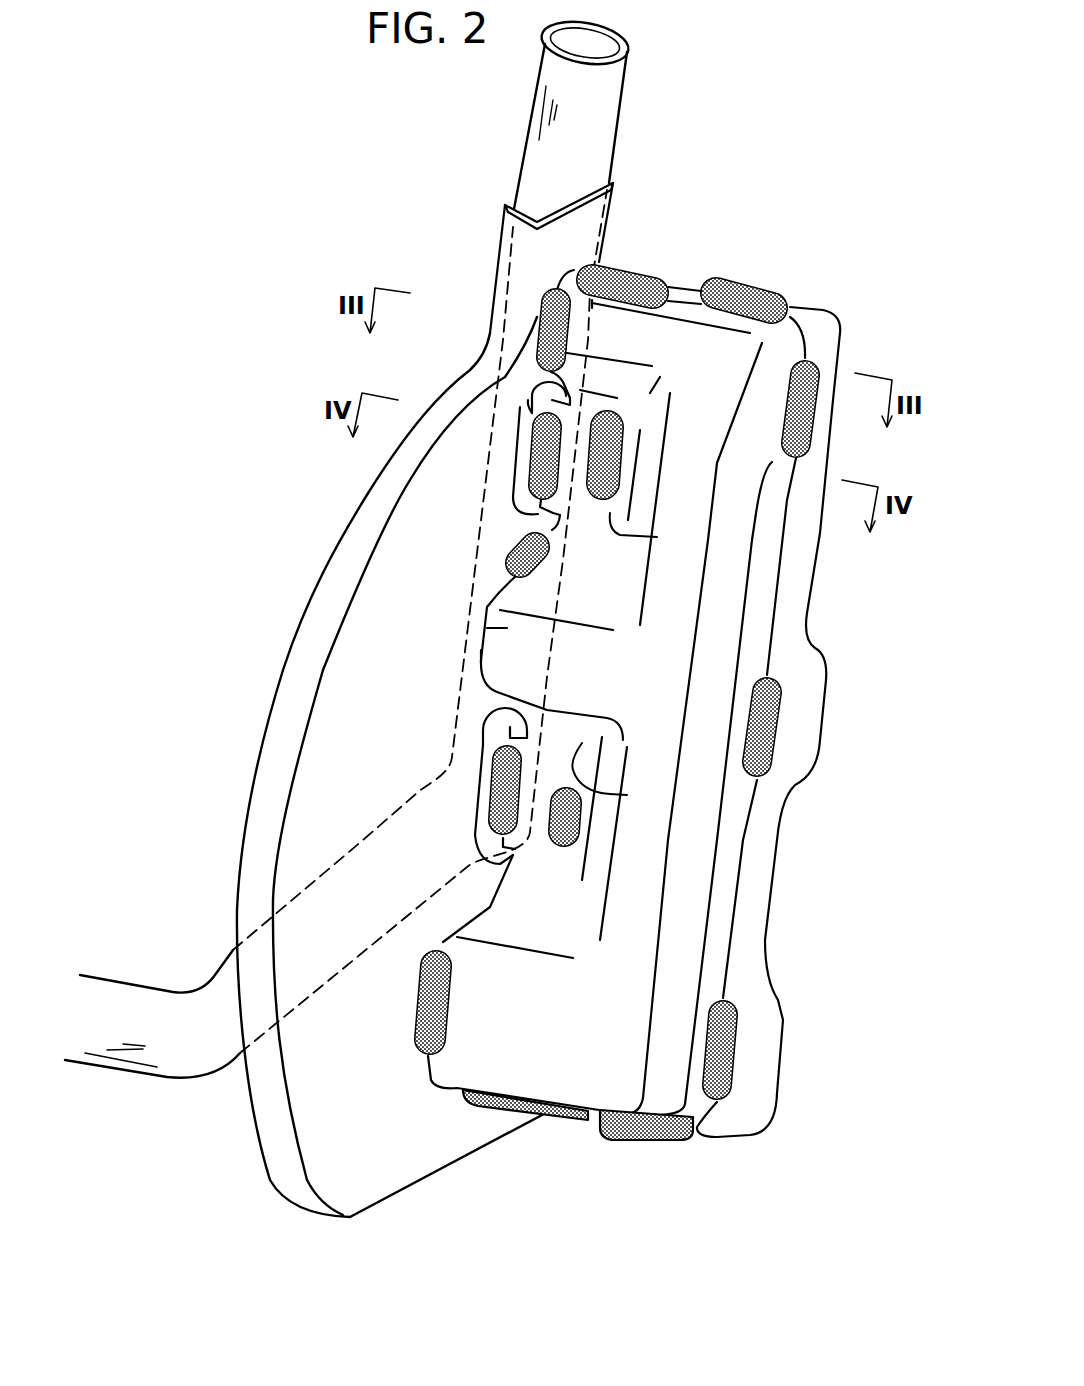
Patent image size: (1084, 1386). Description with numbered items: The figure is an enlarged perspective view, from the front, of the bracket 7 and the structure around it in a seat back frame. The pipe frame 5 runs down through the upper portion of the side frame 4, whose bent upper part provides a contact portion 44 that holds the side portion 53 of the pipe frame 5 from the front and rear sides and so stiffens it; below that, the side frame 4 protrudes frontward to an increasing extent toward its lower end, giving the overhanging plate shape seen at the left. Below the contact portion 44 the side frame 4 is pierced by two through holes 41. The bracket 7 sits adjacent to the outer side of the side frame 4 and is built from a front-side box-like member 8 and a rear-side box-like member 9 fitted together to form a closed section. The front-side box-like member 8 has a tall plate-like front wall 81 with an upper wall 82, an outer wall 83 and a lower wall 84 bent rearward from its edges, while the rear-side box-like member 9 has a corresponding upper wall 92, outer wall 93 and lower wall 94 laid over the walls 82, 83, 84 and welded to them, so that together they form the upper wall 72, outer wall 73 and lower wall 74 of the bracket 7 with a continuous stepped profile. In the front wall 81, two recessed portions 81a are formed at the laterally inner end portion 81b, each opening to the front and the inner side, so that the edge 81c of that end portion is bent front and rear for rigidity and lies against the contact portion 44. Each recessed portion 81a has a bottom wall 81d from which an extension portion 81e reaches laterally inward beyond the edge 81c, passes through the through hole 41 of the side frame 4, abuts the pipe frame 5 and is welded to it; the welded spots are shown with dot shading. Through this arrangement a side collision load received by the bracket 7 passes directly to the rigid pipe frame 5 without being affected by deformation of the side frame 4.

The side frame 4 is at (425, 1194).
The pipe frame 5 is at (614, 112).
The side portion 53 is at (605, 130).
The bracket 7 is at (561, 707).
The front-side box-like member 8 is at (741, 988).
The rear-side box-like member 9 is at (794, 1057).
The through hole 41 is at (533, 390).
The contact portion 44 is at (562, 235).
The upper wall 72 is at (682, 238).
The outer wall 73 is at (844, 580).
The lower wall 74 is at (587, 1168).
The front wall 81 is at (580, 1047).
The recessed portion 81a is at (609, 586).
The laterally inner end portion 81b is at (507, 628).
The edge 81c is at (473, 653).
The bottom wall 81d is at (657, 537).
The extension portion 81e is at (545, 503).
The upper wall 82 is at (650, 300).
The outer wall 83 is at (765, 603).
The lower wall 84 is at (593, 1127).
The upper wall 92 is at (686, 290).
The outer wall 93 is at (805, 560).
The lower wall 94 is at (712, 1135).